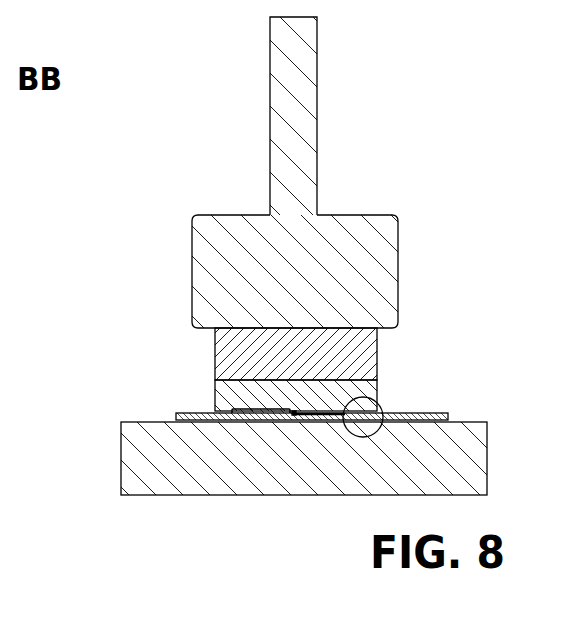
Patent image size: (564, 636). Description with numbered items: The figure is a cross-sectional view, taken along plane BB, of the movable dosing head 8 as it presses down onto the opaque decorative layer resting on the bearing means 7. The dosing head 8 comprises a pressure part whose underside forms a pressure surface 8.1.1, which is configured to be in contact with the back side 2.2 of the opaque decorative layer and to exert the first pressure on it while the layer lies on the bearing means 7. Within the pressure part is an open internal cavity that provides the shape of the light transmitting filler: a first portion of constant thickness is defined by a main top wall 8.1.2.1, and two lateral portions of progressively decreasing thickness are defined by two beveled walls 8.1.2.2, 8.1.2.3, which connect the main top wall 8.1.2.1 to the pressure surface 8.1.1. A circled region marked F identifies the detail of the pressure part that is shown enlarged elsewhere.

The movable dosing head 8 is at (148, 262).
The main top wall 8.1.2.1 is at (313, 412).
The beveled wall 8.1.2.2 is at (235, 411).
The pressure surface 8.1.1 is at (238, 413).
The beveled wall 8.1.2.3 is at (352, 413).
The detail F is at (379, 409).
The back side 2.2 is at (433, 413).
The bearing means 7 is at (103, 452).